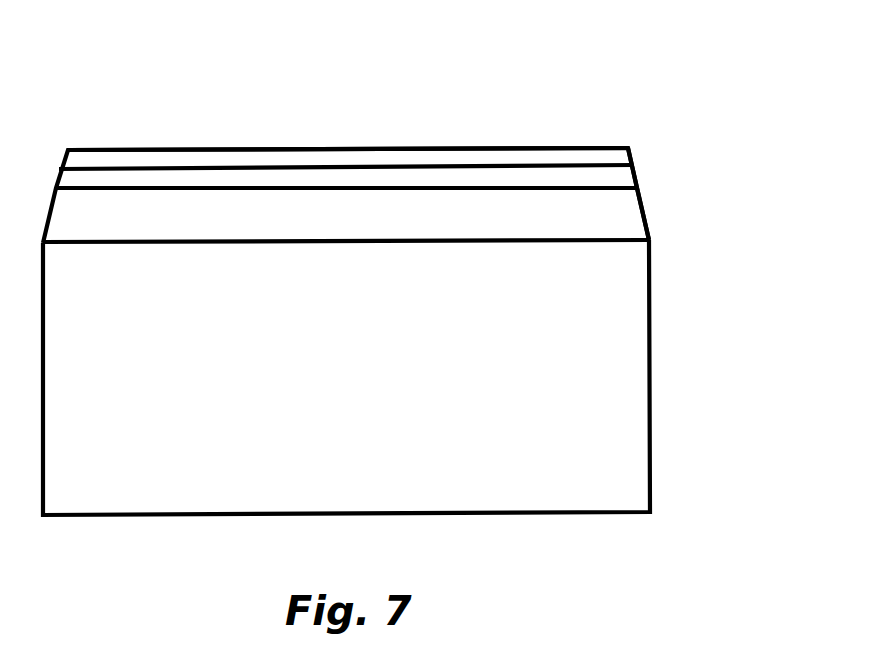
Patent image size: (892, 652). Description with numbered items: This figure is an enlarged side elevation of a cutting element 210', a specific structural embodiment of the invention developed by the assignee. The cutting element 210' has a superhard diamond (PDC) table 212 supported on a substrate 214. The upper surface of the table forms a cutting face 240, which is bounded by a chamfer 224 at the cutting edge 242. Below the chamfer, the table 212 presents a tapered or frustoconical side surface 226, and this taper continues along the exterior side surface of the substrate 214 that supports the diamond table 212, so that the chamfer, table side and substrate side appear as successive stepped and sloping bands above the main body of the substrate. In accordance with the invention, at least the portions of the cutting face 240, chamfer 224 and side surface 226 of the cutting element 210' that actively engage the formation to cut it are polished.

The cutting element 210' is at (441, 270).
The diamond (PDC) table 212 is at (393, 156).
The substrate 214 is at (608, 422).
The chamfer 224 is at (634, 162).
The tapered or frustoconical side surface 226 is at (640, 180).
The cutting face 240 is at (222, 146).
The cutting edge 242 is at (649, 142).